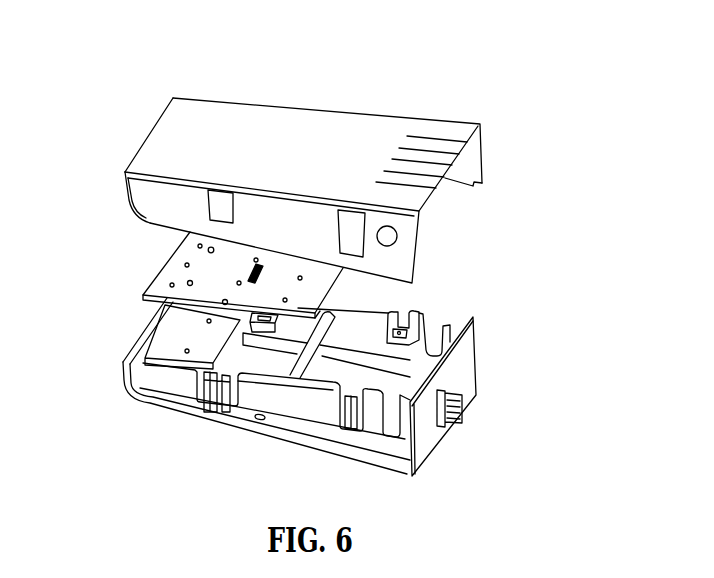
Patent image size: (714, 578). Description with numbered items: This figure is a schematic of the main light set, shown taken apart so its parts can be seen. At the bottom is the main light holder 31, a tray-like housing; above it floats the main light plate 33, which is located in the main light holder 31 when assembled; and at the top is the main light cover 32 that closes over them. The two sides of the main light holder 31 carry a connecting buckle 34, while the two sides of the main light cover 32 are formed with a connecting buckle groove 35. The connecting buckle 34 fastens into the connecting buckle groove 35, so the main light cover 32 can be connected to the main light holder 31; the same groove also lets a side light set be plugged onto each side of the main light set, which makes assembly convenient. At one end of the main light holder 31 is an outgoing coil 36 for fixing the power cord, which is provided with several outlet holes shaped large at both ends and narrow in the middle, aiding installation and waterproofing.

The main light holder 31 is at (467, 342).
The main light cover 32 is at (325, 142).
The main light plate 33 is at (163, 290).
The connecting buckle 34 is at (222, 416).
The connecting buckle groove 35 is at (225, 205).
The outgoing coil 36 is at (455, 398).